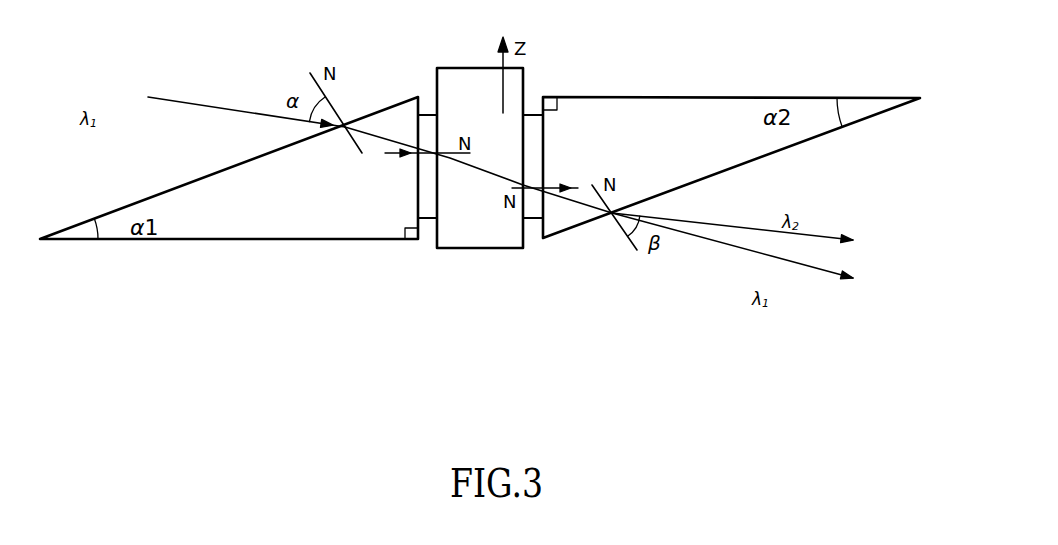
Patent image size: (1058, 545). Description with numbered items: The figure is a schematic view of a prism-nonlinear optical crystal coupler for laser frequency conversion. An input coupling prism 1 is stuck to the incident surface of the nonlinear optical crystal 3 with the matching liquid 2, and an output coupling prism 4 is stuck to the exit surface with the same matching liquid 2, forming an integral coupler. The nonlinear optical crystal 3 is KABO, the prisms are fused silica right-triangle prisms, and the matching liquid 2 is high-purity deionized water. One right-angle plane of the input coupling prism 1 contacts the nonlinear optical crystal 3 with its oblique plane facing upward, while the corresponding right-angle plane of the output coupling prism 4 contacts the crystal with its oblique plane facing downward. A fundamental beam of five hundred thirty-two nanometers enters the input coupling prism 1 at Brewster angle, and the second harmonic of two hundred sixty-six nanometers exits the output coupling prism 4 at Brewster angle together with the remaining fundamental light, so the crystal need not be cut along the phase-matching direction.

The input coupling prism 1 is at (229, 189).
The matching liquid 2 is at (436, 236).
The nonlinear optical crystal 3 is at (454, 139).
The output coupling prism 4 is at (731, 138).